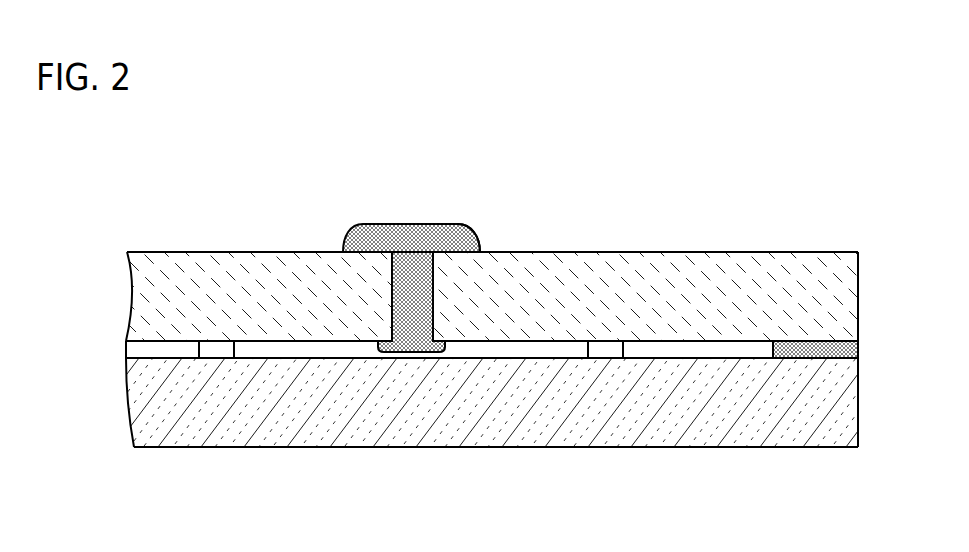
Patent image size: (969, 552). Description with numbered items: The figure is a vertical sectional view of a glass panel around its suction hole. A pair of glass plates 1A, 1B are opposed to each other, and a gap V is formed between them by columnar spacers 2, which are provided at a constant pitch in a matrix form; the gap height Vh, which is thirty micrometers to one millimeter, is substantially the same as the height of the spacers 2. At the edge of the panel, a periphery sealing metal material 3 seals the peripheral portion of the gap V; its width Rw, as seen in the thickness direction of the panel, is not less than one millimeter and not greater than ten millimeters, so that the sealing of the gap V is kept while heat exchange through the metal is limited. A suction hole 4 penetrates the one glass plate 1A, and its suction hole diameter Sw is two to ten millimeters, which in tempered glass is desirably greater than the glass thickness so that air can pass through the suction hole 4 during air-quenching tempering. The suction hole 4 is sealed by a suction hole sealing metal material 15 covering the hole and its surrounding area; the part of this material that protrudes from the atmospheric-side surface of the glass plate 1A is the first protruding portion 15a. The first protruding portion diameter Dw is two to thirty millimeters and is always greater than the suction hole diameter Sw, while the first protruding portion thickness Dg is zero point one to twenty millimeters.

The glass plate 1A is at (686, 272).
The glass plate 1B is at (606, 438).
The columnar spacer 2 is at (218, 341).
The periphery sealing metal material 3 is at (802, 352).
The suction hole 4 is at (418, 355).
The suction hole sealing metal material 15 is at (411, 223).
The first protruding portion 15a is at (483, 239).
The gap V is at (296, 350).
The gap height Vh is at (91, 390).
The first protruding portion diameter Dw is at (479, 250).
The first protruding portion thickness Dg is at (458, 223).
The suction hole diameter Sw is at (392, 355).
The width of the periphery sealing metal material Rw is at (858, 252).